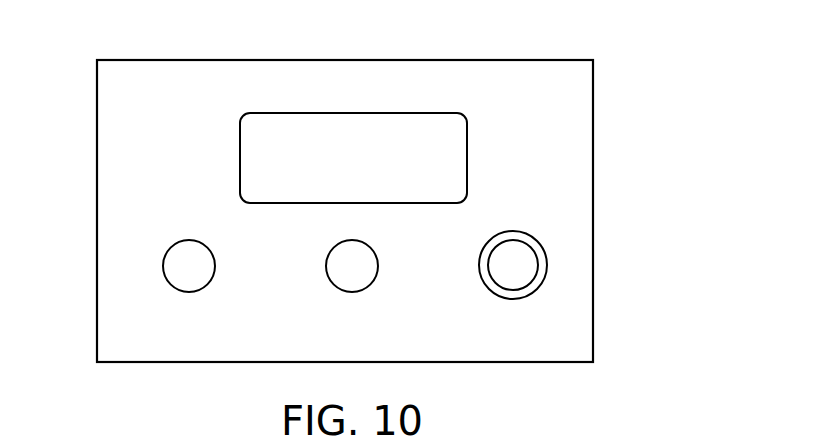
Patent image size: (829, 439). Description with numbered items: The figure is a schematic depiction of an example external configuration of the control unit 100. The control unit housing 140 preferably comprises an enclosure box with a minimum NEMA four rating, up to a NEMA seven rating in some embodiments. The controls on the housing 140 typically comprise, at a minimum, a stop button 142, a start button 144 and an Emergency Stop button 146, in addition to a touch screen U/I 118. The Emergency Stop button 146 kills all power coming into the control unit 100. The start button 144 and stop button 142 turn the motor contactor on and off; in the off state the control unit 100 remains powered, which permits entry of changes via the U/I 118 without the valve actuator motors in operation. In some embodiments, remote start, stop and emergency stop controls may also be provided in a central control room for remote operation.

The control unit 100 is at (407, 190).
The touch screen U/I 118 is at (240, 167).
The control unit housing 140 is at (593, 162).
The stop button 142 is at (163, 265).
The start button 144 is at (326, 265).
The Emergency Stop button 146 is at (550, 270).